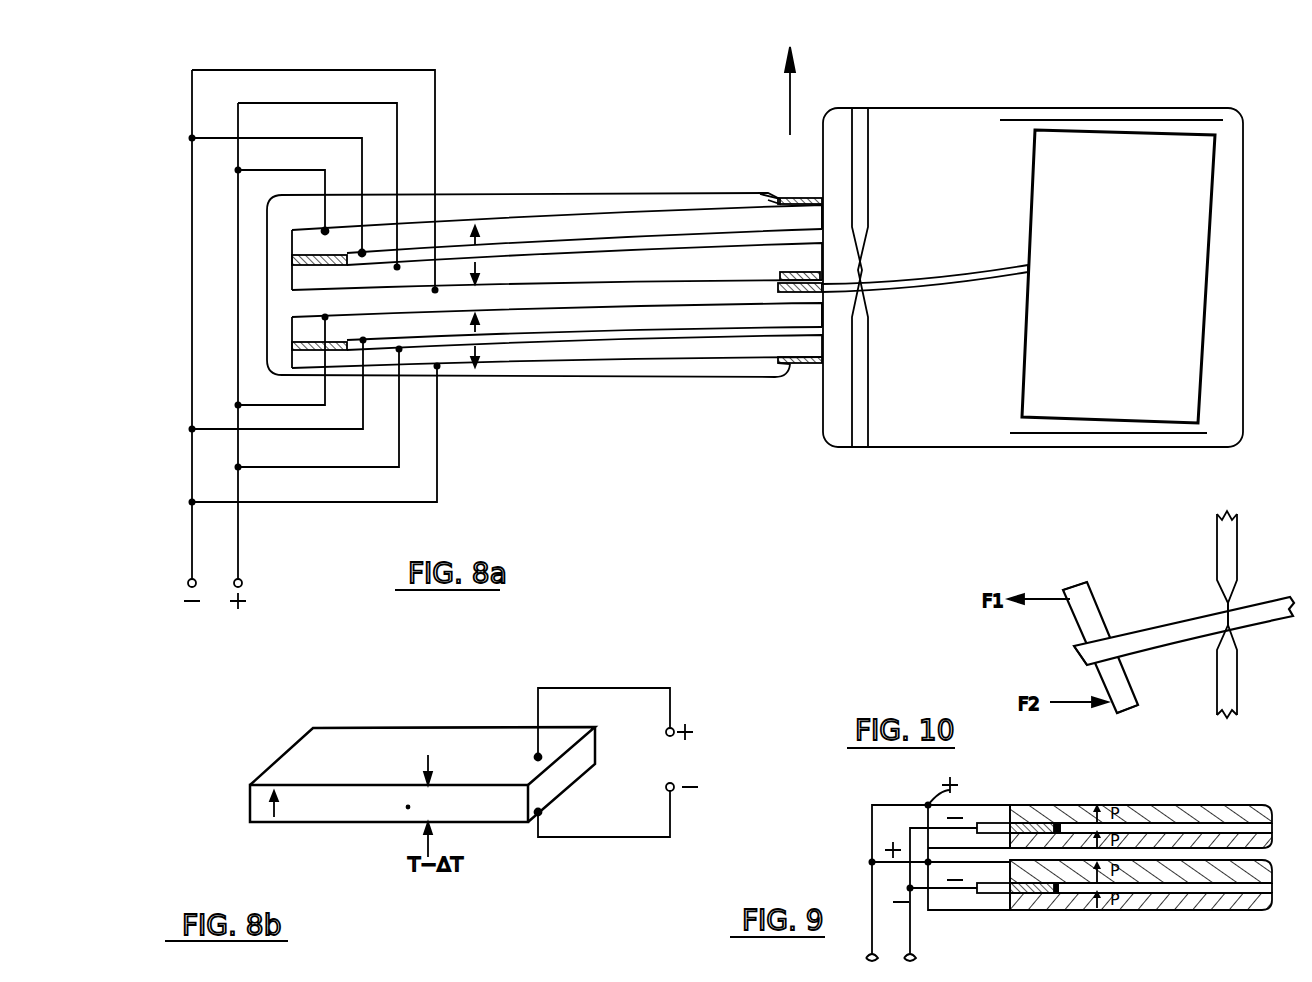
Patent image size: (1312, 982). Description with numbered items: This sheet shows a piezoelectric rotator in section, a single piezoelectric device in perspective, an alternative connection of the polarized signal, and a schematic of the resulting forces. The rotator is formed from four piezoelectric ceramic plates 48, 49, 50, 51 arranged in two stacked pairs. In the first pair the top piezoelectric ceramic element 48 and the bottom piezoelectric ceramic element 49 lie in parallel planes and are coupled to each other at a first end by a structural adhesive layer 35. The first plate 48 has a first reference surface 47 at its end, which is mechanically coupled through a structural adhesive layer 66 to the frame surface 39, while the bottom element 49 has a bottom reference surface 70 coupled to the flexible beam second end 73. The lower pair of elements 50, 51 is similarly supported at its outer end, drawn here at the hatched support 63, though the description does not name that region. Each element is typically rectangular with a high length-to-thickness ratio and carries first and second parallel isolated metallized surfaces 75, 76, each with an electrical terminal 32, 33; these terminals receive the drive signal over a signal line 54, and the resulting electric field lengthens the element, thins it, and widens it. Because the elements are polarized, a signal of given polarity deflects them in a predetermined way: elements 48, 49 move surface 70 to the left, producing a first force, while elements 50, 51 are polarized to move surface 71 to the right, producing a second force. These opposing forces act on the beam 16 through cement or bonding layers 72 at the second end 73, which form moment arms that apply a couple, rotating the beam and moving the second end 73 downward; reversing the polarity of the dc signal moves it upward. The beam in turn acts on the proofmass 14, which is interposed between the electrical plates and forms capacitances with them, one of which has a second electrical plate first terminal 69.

In FIG. 8a, the proofmass 14 is at (1182, 176).
In FIG. 10, the beam 16 is at (1145, 630).
In FIG. 8a, the electrical terminal 32 is at (328, 230).
In FIG. 8b, the electrical terminal 32 is at (537, 760).
In FIG. 8a, the electrical terminal 33 is at (376, 247).
In FIG. 8b, the electrical terminal 33 is at (543, 812).
In FIG. 8a, the structural adhesive layer 35 is at (295, 258).
In FIG. 8a, the frame surface 39 is at (800, 198).
In FIG. 8a, the first reference surface 47 is at (822, 224).
In FIG. 8a, the piezoelectric ceramic plate 48 is at (557, 247).
In FIG. 8b, the piezoelectric ceramic plate 48 is at (422, 774).
In FIG. 8a, the piezoelectric ceramic element 49 is at (557, 266).
In FIG. 8a, the piezoelectric ceramic plate 50 is at (557, 335).
In FIG. 8a, the piezoelectric ceramic plate 51 is at (557, 351).
In FIG. 8b, the signal line 54 is at (578, 688).
In FIG. 8a, the lower support 63 is at (812, 358).
In FIG. 8a, the structural adhesive layer 66 is at (768, 196).
In FIG. 8a, the second electrical plate first terminal 69 is at (812, 365).
In FIG. 8a, the bottom reference surface 70 is at (815, 270).
In FIG. 10, the bottom reference surface 70 is at (1071, 585).
In FIG. 8a, the surface 71 is at (825, 294).
In FIG. 10, the surface 71 is at (1128, 709).
In FIG. 8a, the structural adhesive layer 72 is at (778, 288).
In FIG. 10, the structural adhesive layer 72 is at (1088, 612).
In FIG. 8a, the flexible beam second end 73 is at (823, 292).
In FIG. 10, the flexible beam second end 73 is at (1086, 668).
In FIG. 8b, the metallized surface 75 is at (378, 775).
In FIG. 8b, the metallized surface 76 is at (368, 824).